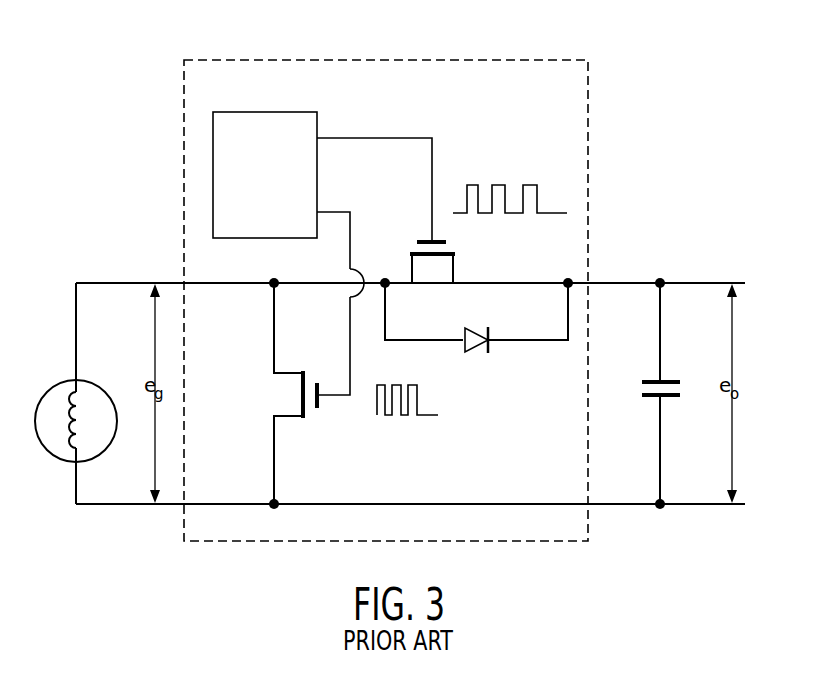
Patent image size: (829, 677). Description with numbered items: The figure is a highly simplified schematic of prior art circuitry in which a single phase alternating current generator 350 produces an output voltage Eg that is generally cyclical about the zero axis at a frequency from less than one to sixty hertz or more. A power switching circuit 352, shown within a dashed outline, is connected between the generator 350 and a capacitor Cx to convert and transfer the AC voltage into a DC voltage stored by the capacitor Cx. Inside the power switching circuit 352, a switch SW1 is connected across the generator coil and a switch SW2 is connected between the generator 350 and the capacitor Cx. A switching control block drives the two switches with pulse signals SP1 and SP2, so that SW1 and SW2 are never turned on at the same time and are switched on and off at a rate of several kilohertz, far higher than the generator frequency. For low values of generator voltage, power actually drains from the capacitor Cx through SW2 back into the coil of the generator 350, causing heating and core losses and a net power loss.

The single phase alternating current generator 350 is at (60, 383).
The power switching circuit 352 is at (442, 64).
The switching pulse signal 1 SP1 is at (343, 212).
The switching pulse signal 2 SP2 is at (385, 138).
The switch SW1 is at (294, 418).
The switch SW2 is at (455, 272).
The capacitor Cx is at (649, 393).